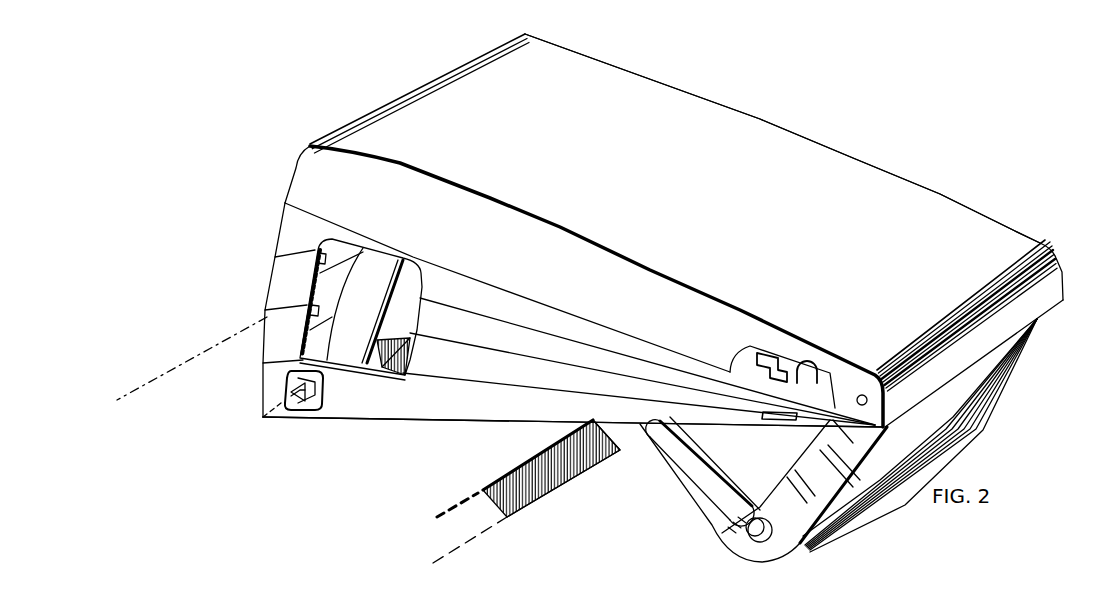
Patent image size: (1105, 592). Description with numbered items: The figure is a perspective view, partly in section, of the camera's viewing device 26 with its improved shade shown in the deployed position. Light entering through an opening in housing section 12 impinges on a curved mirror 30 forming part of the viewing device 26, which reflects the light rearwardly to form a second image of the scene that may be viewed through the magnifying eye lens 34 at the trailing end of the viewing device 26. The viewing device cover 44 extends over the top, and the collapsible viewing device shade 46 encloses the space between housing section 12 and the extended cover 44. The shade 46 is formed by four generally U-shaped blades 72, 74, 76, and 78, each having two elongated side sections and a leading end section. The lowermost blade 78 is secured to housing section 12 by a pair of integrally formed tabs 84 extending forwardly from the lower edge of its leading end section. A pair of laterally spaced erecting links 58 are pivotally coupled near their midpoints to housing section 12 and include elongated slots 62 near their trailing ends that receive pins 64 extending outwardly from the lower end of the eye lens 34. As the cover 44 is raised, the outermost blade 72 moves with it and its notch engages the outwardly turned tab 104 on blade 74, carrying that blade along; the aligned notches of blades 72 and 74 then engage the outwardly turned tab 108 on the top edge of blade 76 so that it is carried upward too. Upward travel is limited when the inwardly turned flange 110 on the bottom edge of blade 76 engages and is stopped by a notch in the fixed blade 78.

The housing section 12 is at (470, 480).
The viewing device 26 is at (308, 144).
The curved mirror 30 is at (402, 313).
The magnifying eye lens 34 is at (933, 418).
The viewing device cover 44 is at (846, 180).
The collapsible viewing device shade 46 is at (460, 420).
The erecting links 58 is at (633, 443).
The elongated slots 62 is at (706, 505).
The pins 64 is at (762, 542).
The blade 72 is at (281, 228).
The blade 74 is at (270, 284).
The blade 76 is at (263, 339).
The blade 78 is at (263, 392).
The tabs 84 is at (322, 398).
The outwardly turned tab 104 is at (778, 359).
The outwardly turned tab 108 is at (821, 375).
The inwardly turned flange 110 is at (779, 420).